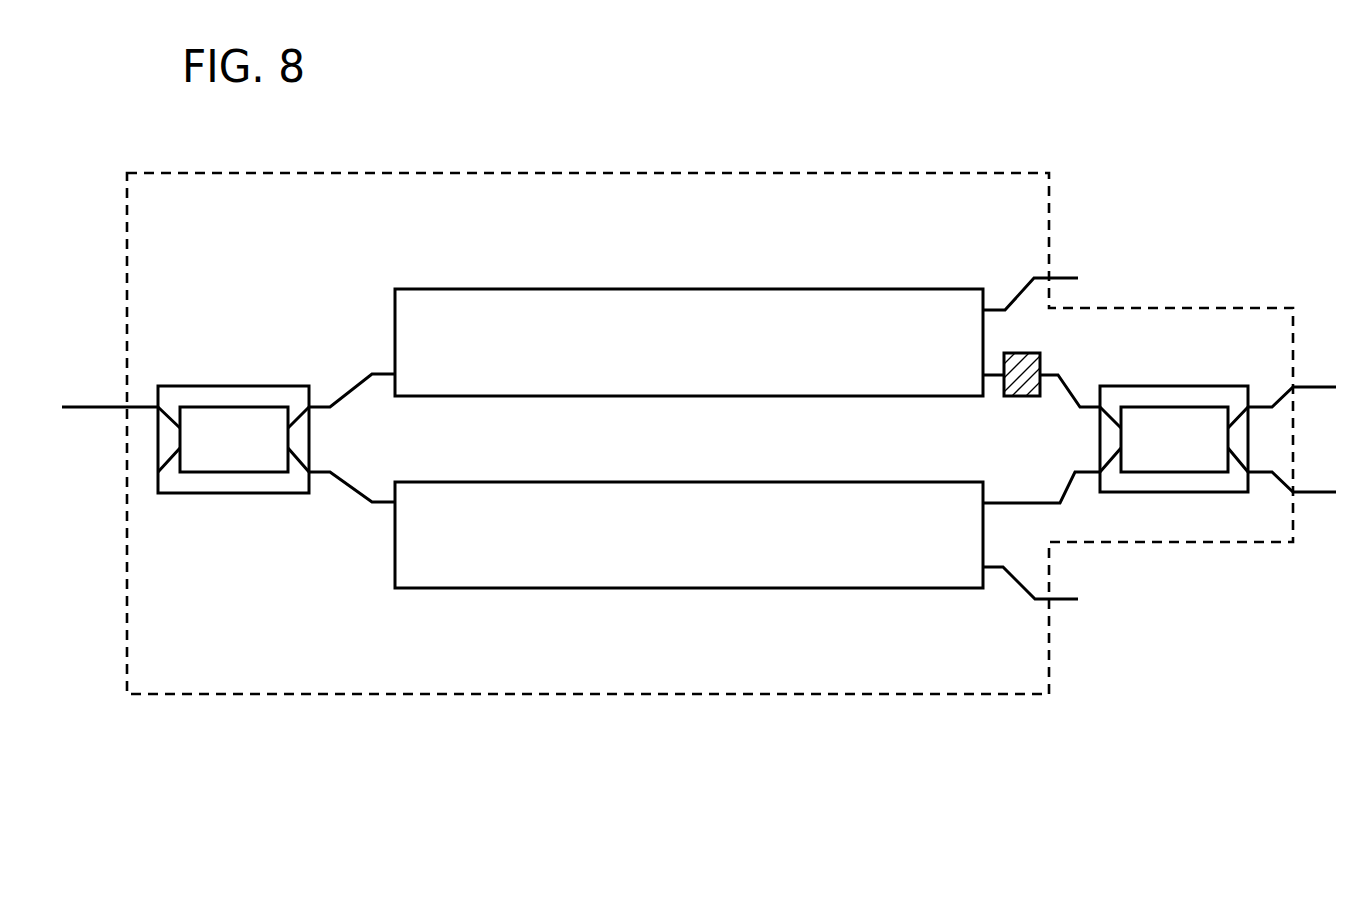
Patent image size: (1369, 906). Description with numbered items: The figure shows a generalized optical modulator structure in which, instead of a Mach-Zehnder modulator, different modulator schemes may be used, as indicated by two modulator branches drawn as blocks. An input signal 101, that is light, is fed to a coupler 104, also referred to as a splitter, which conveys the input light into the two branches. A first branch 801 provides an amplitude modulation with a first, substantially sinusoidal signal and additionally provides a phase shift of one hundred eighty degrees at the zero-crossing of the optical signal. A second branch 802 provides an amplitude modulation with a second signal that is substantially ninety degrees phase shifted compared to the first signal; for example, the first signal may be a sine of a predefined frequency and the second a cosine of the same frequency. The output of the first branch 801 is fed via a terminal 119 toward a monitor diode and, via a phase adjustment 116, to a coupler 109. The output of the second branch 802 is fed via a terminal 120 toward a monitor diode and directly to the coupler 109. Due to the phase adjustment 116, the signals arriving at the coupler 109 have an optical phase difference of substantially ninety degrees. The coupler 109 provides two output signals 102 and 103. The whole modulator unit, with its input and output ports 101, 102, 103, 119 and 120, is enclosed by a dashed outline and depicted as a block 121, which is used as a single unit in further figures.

The input signal 101 is at (110, 389).
The first output signal 102 is at (1292, 378).
The second output signal 103 is at (1292, 476).
The coupler 104 is at (252, 386).
The coupler 109 is at (1187, 386).
The phase adjustment 116 is at (1010, 396).
The terminal 119 is at (1048, 278).
The terminal 120 is at (1042, 599).
The block 121 is at (607, 694).
The first branch 801 is at (552, 289).
The second branch 802 is at (450, 588).